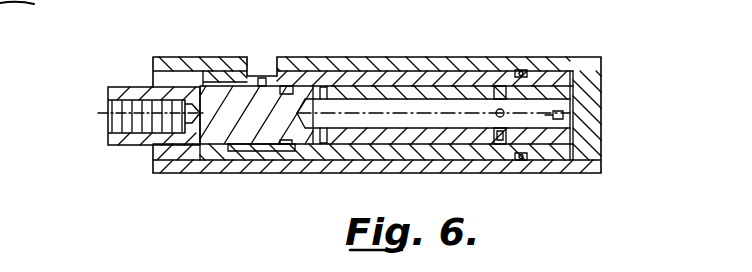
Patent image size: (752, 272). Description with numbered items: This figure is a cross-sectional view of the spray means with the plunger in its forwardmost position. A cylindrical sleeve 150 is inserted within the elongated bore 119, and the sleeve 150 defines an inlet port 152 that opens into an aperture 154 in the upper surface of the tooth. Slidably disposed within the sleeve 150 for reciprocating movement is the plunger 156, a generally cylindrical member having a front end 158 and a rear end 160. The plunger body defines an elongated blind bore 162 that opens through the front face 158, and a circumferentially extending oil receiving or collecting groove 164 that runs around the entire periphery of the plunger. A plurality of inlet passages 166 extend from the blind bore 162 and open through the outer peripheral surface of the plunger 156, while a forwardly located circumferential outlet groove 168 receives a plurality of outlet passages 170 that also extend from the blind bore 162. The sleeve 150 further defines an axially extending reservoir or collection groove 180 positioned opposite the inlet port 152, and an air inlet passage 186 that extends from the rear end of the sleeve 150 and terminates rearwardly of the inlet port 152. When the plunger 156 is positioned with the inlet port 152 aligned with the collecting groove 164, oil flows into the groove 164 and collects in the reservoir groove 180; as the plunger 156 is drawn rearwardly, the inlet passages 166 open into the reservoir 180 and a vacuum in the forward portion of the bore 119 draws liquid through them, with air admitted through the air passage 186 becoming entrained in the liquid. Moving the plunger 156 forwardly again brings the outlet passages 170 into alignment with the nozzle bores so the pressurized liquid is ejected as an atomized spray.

The elongated bore 119 is at (566, 62).
The cylindrical sleeve 150 is at (446, 70).
The inlet port 152 is at (263, 76).
The aperture 154 is at (276, 62).
The plunger 156 is at (206, 156).
The front end 158 is at (566, 110).
The rear end 160 is at (108, 91).
The blind bore 162 is at (563, 121).
The oil receiving groove 164 is at (296, 67).
The inlet passages 166 is at (356, 70).
The outlet groove 168 is at (505, 62).
The outlet passages 170 is at (524, 62).
The reservoir groove 180 is at (242, 166).
The air inlet passage 186 is at (207, 80).